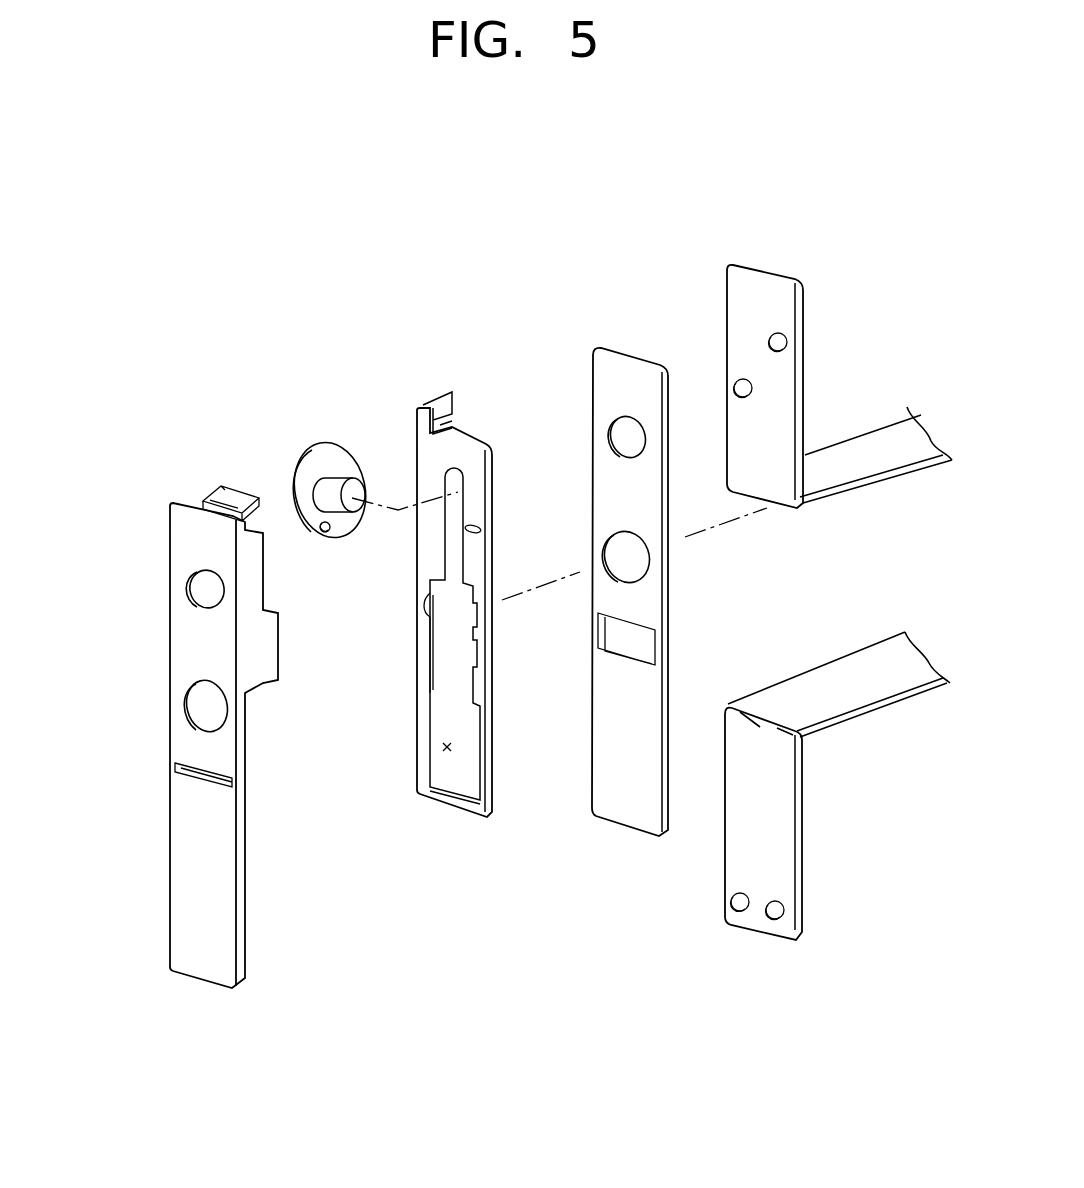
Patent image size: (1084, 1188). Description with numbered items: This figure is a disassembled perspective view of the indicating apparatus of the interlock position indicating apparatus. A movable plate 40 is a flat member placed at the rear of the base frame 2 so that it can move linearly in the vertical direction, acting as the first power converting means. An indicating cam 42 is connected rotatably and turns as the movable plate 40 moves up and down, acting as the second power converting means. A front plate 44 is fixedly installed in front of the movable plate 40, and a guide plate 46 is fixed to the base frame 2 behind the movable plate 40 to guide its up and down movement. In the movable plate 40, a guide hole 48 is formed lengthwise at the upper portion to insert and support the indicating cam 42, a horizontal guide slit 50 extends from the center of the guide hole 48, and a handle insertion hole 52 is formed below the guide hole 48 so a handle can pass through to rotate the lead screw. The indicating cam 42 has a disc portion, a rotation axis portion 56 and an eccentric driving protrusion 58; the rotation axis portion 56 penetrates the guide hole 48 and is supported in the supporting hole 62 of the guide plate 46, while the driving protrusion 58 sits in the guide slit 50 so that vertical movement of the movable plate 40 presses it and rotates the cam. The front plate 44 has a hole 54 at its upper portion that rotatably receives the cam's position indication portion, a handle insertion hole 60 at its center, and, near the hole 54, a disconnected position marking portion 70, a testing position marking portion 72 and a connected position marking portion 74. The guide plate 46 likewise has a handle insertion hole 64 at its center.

The base frame 2 is at (781, 388).
The movable plate 40 is at (460, 803).
The indicating cam 42 is at (323, 468).
The front plate 44 is at (190, 944).
The guide plate 46 is at (622, 812).
The guide hole 48 is at (453, 478).
The guide slit 50 is at (472, 527).
The handle insertion hole 52 is at (446, 748).
The hole 54 is at (200, 605).
The rotation axis portion 56 is at (340, 483).
The driving protrusion 58 is at (330, 532).
The handle insertion hole 60 is at (207, 707).
The supporting hole 62 is at (628, 437).
The handle insertion hole 64 is at (627, 557).
The disconnected position marking portion 70 is at (226, 612).
The testing position marking portion 72 is at (226, 593).
The connected position marking portion 74 is at (222, 573).